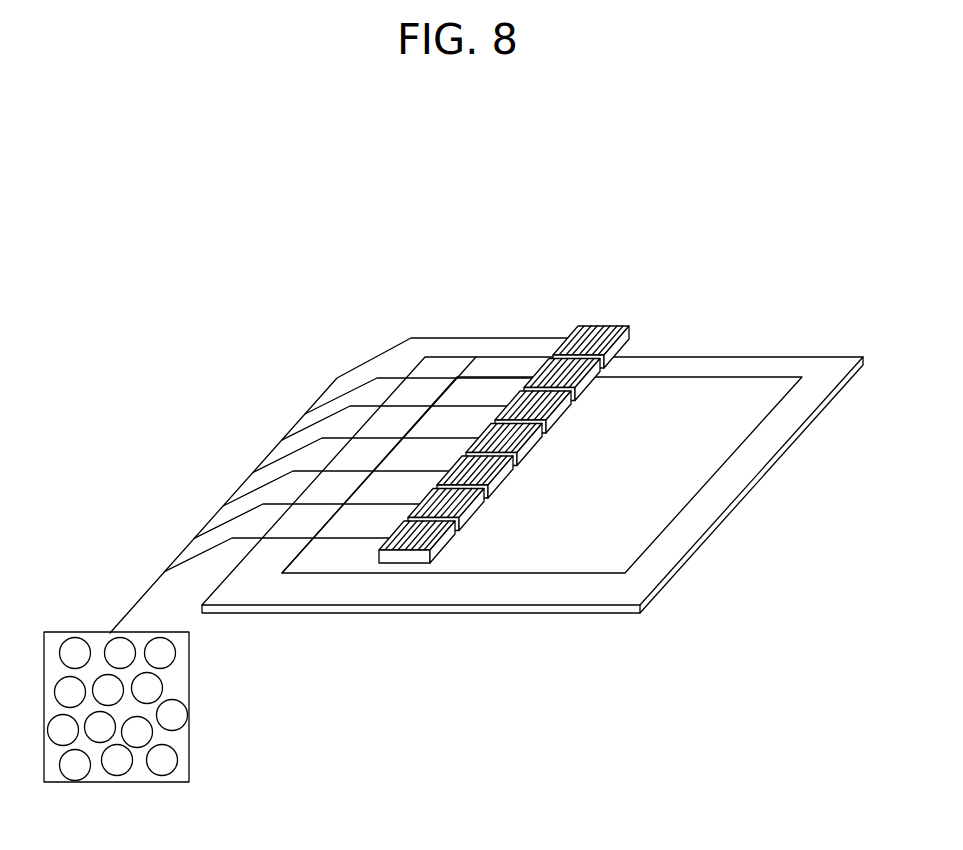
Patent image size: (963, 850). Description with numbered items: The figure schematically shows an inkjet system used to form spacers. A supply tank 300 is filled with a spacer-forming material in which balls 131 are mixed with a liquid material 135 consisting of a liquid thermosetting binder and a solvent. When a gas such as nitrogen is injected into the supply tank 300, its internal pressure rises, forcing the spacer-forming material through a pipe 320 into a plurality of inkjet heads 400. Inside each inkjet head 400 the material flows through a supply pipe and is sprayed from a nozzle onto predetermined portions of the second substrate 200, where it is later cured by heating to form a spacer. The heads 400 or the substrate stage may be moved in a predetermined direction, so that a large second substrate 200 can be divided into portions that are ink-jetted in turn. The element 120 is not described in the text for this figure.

The substrate plate 120 is at (753, 457).
The second substrate 200 is at (725, 377).
The pipe 320 is at (368, 362).
The inkjet heads 400 is at (631, 314).
The supply tank 300 is at (190, 650).
The liquid material 135 is at (173, 688).
The balls 131 is at (168, 758).